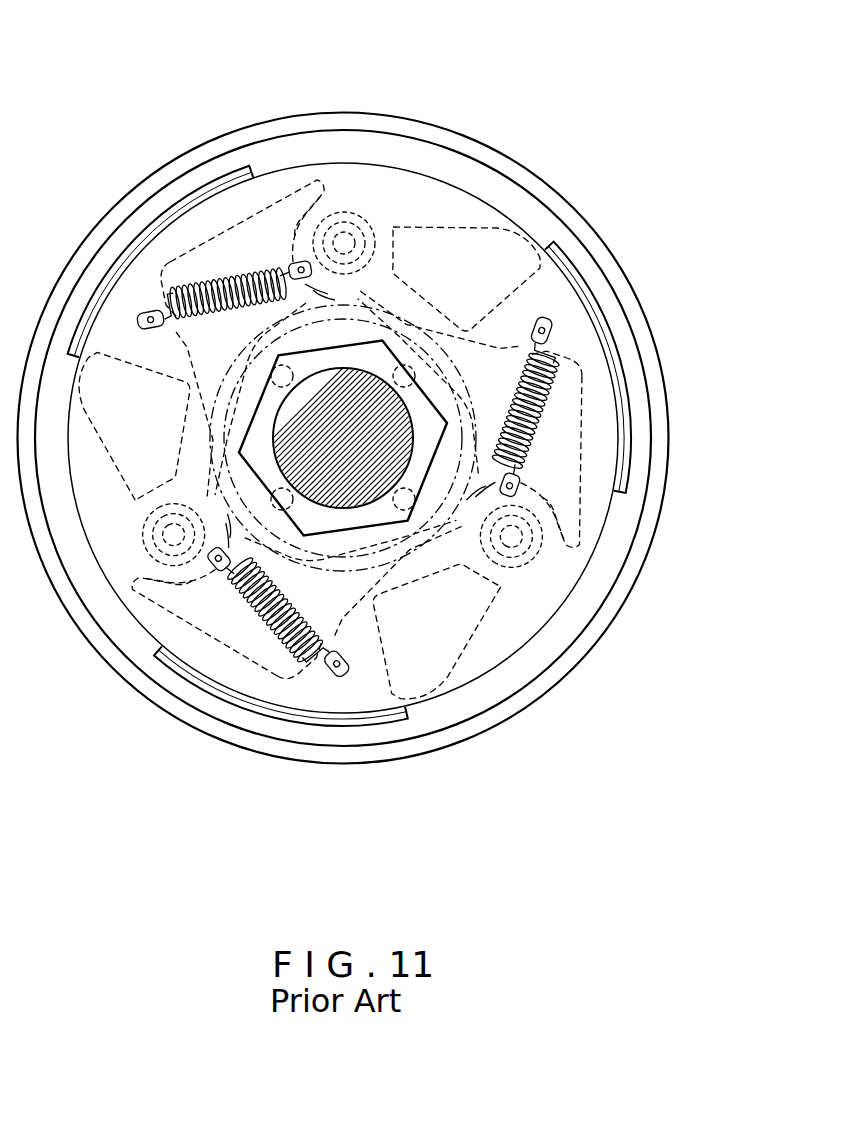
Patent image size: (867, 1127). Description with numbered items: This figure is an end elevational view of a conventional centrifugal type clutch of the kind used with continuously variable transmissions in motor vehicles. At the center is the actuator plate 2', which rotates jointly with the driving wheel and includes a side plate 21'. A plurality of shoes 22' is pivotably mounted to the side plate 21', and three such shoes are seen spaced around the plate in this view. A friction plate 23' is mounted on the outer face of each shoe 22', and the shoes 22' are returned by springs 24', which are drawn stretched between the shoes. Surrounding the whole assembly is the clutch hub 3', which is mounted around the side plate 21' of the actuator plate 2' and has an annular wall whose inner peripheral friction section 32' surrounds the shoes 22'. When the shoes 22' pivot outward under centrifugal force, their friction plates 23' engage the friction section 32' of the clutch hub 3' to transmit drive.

The actuator plate 2' is at (372, 319).
The side plate 21' is at (343, 359).
The shoe 22' is at (357, 459).
The friction plate 23' is at (396, 489).
The spring 24' is at (446, 484).
The clutch hub 3' is at (391, 438).
The inner peripheral friction section 32' is at (399, 438).